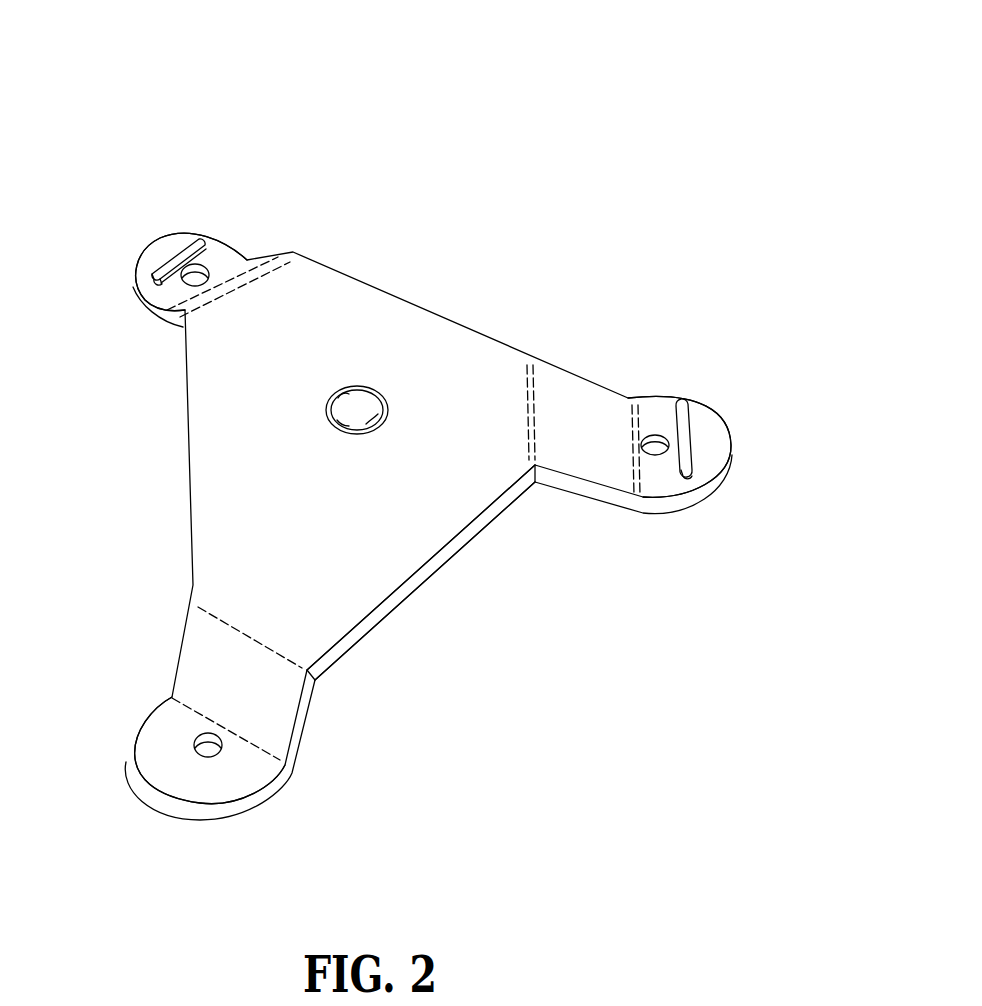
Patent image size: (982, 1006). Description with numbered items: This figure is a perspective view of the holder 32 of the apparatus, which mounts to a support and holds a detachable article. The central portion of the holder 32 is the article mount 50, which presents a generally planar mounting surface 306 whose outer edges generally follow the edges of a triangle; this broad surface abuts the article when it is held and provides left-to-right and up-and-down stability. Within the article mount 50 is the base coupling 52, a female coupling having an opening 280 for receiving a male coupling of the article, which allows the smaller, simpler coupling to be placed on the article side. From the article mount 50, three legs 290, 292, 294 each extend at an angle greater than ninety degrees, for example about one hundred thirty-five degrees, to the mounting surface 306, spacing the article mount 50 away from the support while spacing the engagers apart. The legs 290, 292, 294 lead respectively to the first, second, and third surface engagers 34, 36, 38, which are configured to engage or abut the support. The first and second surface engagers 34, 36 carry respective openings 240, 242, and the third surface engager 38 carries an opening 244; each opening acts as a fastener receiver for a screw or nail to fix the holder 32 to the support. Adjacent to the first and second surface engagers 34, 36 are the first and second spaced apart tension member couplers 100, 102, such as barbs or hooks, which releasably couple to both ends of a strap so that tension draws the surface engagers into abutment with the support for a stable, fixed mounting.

The holder 32 is at (522, 95).
The first surface engager 34 is at (140, 268).
The second surface engager 36 is at (703, 424).
The third surface engager 38 is at (160, 767).
The article mount 50 is at (240, 482).
The base coupling 52 is at (315, 420).
The first tension member coupler 100 is at (168, 248).
The second tension member coupler 102 is at (705, 440).
The opening 240 is at (203, 270).
The opening 242 is at (656, 437).
The opening 244 is at (200, 740).
The opening 280 is at (360, 403).
The leg 290 is at (178, 317).
The leg 292 is at (582, 415).
The leg 294 is at (212, 660).
The generally planar mounting surface 306 is at (377, 530).